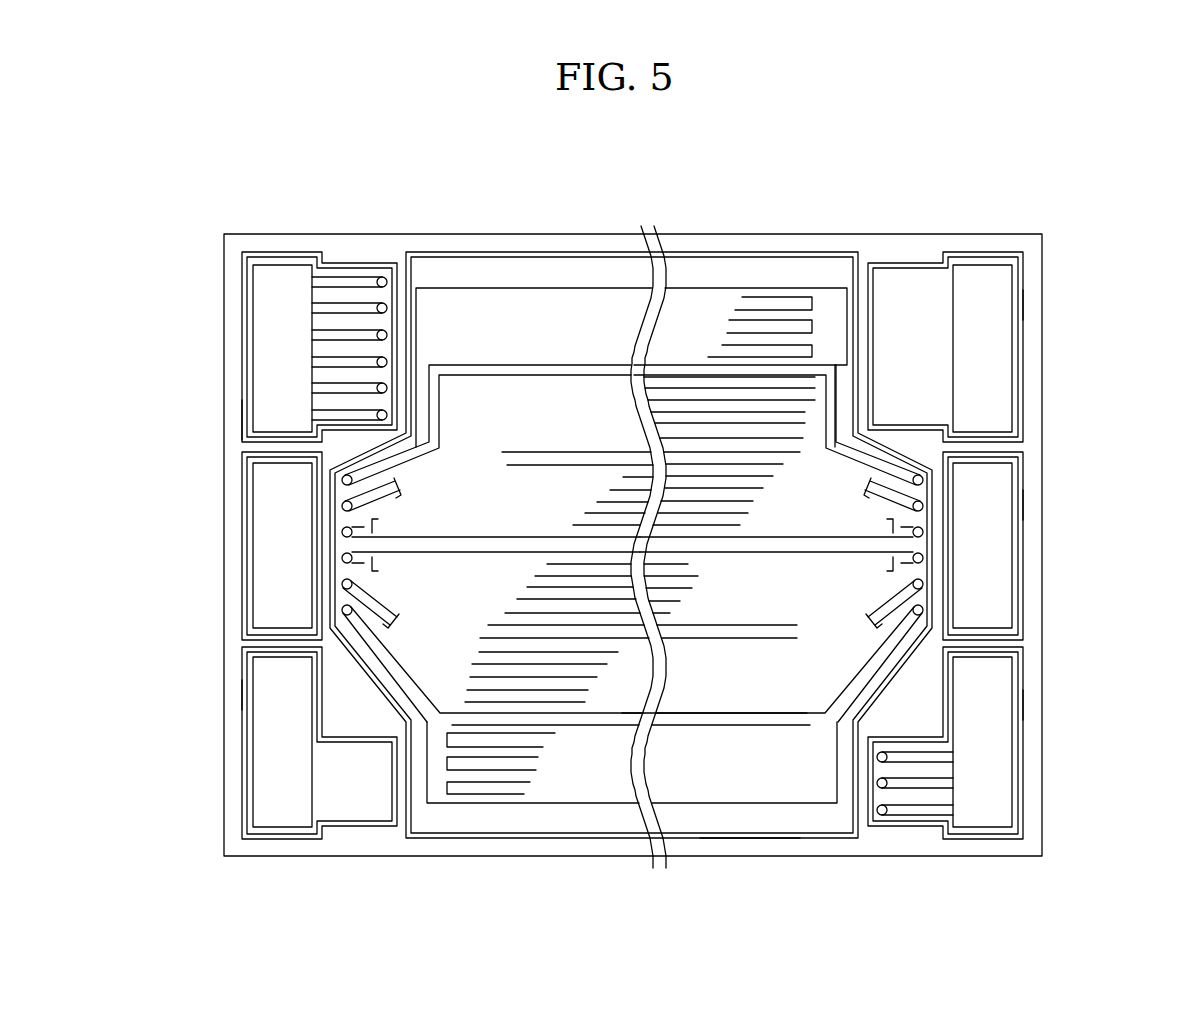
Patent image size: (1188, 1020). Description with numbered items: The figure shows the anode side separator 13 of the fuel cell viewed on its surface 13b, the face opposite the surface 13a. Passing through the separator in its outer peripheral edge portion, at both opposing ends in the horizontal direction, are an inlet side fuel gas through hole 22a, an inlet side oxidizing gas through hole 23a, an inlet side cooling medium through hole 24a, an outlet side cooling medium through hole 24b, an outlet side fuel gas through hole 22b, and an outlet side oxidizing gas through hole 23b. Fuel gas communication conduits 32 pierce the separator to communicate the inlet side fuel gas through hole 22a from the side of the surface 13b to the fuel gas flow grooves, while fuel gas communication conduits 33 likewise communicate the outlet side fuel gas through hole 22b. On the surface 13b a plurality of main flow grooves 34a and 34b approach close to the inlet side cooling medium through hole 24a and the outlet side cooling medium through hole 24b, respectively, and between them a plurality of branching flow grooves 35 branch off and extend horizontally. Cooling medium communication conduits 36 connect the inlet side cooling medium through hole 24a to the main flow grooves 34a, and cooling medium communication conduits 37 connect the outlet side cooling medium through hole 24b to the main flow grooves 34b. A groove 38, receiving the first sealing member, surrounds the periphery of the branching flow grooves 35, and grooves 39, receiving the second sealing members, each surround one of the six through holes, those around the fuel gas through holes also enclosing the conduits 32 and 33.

The anode side separator 13 is at (727, 226).
The surface of the anode side separator 13a is at (490, 258).
The surface of the anode side separator 13b is at (680, 247).
The inlet side fuel gas through hole 22a is at (280, 350).
The outlet side fuel gas through hole 22b is at (988, 722).
The inlet side oxidizing gas through hole 23a is at (997, 347).
The outlet side oxidizing gas through hole 23b is at (275, 733).
The inlet side cooling medium through hole 24a is at (280, 552).
The outlet side cooling medium through hole 24b is at (985, 542).
The fuel gas communication conduits 32 is at (318, 310).
The fuel gas communication conduits 33 is at (945, 810).
The main flow grooves 34a is at (395, 520).
The main flow grooves 34b is at (887, 533).
The branching flow grooves 35 is at (723, 443).
The cooling medium communication conduits 36 is at (342, 481).
The cooling medium communication conduits 37 is at (923, 612).
The groove 38 is at (750, 838).
The grooves 39 is at (242, 422).